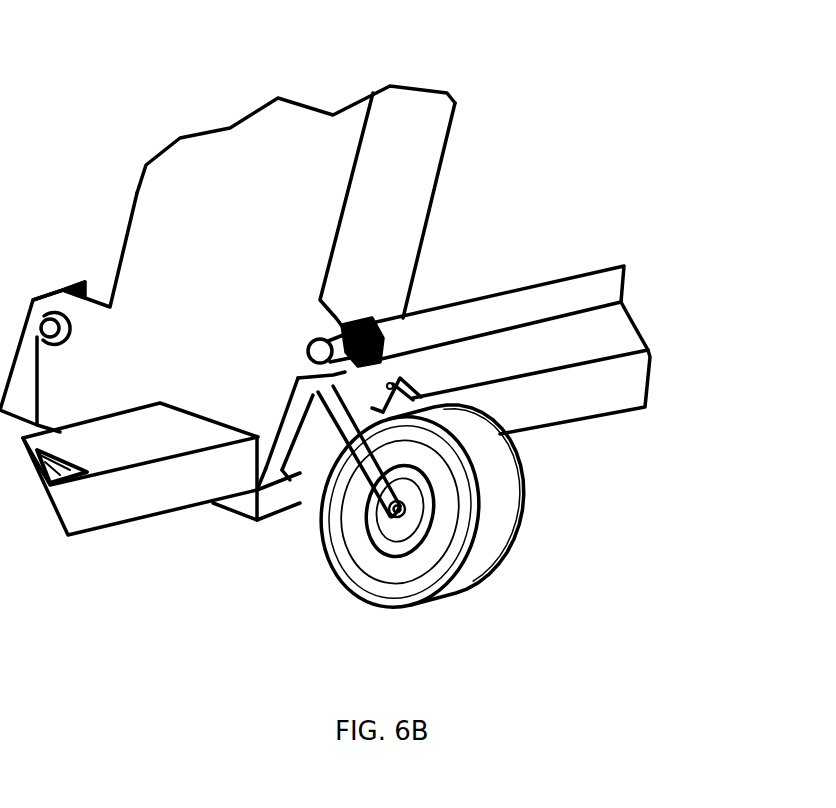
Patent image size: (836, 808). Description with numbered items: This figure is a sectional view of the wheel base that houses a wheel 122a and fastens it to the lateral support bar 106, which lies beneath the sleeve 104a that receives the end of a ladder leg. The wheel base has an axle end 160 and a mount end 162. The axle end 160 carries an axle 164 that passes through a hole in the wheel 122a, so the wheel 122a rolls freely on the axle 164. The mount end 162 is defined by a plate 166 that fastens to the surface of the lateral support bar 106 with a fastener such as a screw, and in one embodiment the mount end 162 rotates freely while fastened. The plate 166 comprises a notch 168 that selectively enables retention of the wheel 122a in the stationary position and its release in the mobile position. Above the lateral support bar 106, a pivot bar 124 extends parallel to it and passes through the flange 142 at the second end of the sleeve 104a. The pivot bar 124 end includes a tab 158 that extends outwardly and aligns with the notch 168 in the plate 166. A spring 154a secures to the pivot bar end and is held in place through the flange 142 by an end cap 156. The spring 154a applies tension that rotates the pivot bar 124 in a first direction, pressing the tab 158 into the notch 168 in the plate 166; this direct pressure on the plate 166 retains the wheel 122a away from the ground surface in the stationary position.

The sleeve 104a is at (137, 192).
The flange 142 is at (338, 318).
The spring 154a is at (388, 332).
The end cap 156 is at (307, 350).
The pivot bar 124 is at (605, 280).
The lateral support bar 106 is at (643, 370).
The mount end 162 is at (413, 369).
The plate 166 is at (390, 387).
The notch 168 is at (313, 483).
The tab 158 is at (340, 543).
The wheel 122a is at (505, 522).
The axle end 160 is at (387, 536).
The axle 164 is at (404, 513).